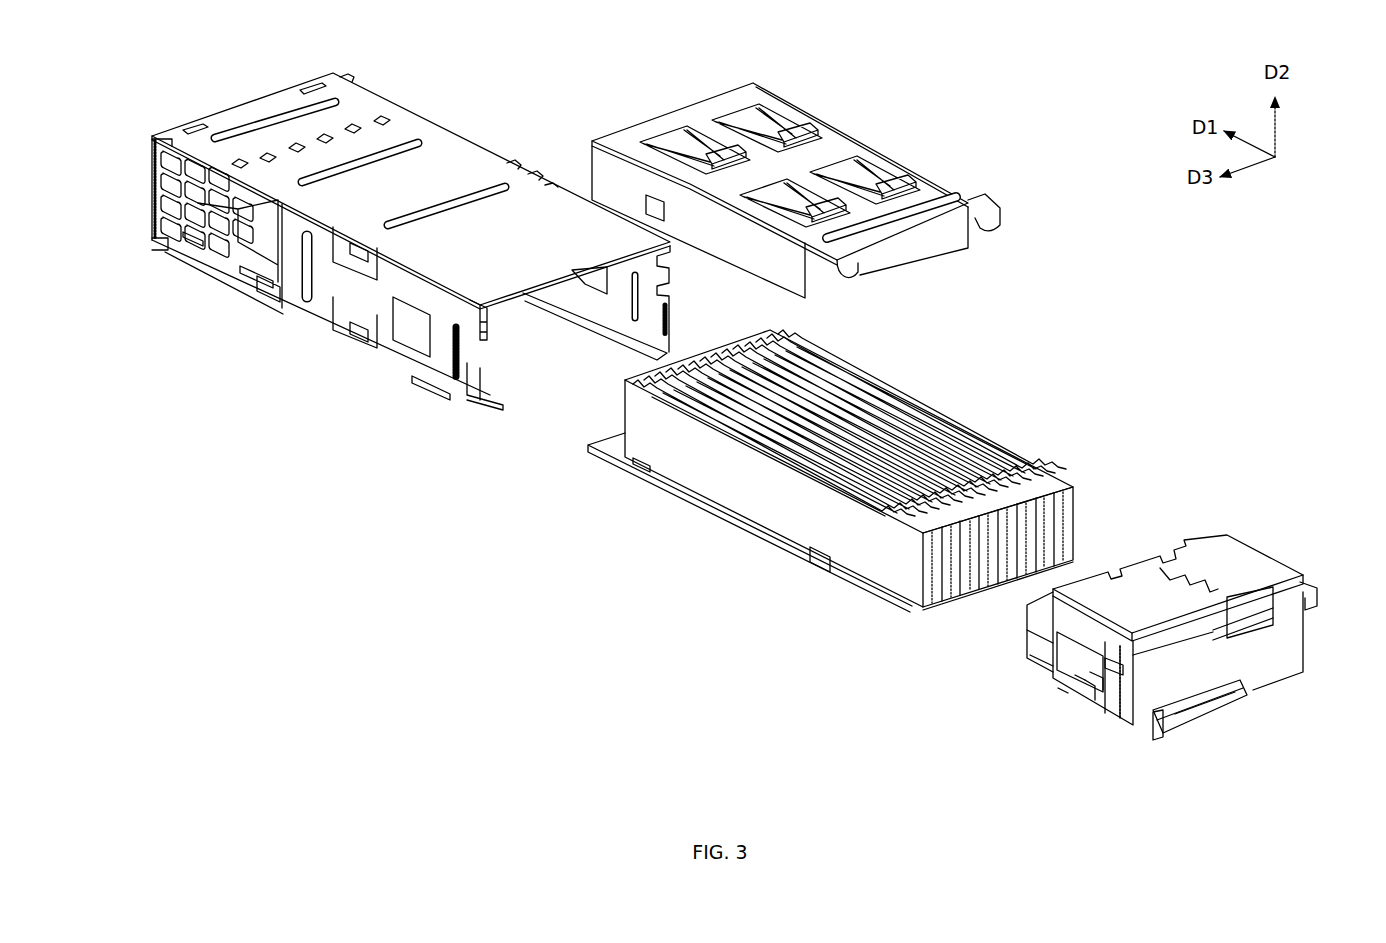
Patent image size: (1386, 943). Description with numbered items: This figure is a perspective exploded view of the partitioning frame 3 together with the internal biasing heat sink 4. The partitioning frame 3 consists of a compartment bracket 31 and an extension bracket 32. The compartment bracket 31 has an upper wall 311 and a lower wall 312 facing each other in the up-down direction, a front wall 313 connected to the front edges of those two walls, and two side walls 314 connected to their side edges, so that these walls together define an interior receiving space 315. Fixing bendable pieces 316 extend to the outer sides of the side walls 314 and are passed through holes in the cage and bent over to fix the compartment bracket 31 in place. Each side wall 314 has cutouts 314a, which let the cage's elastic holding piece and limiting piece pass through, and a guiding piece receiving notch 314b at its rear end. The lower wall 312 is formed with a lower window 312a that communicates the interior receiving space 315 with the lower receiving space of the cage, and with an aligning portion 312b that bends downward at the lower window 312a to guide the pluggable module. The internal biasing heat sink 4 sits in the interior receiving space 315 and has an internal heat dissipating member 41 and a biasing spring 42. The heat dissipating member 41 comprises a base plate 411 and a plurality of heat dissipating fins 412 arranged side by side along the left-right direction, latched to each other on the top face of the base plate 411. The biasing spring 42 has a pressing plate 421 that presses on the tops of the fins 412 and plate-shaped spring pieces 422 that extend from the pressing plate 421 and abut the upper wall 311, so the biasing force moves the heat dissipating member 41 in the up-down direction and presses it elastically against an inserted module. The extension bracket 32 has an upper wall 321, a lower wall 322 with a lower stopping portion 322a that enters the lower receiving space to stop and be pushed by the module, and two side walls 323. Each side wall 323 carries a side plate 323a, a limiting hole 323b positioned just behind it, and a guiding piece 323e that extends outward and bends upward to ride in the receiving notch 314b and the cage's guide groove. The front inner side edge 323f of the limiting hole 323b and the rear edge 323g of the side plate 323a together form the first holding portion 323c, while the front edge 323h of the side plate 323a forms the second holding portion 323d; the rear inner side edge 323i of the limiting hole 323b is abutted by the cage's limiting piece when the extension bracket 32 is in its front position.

The partitioning frame 3 is at (418, 95).
The compartment bracket 31 is at (438, 138).
The upper wall 311 is at (464, 162).
The lower wall 312 is at (230, 263).
The lower window 312a is at (558, 312).
The aligning portion 312b is at (426, 383).
The front wall 313 is at (180, 170).
The side walls 314 is at (325, 278).
The cutouts 314a is at (455, 327).
The guiding piece receiving notch 314b is at (483, 342).
The interior receiving space 315 is at (226, 230).
The fixing bendable pieces 316 is at (360, 335).
The internal biasing heat sink 4 is at (678, 512).
The internal heat dissipating member 41 is at (723, 528).
The base plate 411 is at (750, 537).
The heat dissipating fins 412 is at (912, 407).
The biasing spring 42 is at (877, 137).
The pressing plate 421 is at (828, 152).
The plate-shaped spring pieces 422 is at (740, 148).
The extension bracket 32 is at (1258, 543).
The upper wall 321 is at (1210, 557).
The lower wall 322 is at (1143, 707).
The lower stopping portion 322a is at (1200, 717).
The side walls 323 is at (1277, 593).
The side plate 323a is at (1040, 650).
The limiting hole 323b is at (1103, 677).
The first holding portion 323c is at (1078, 662).
The second holding portion 323d is at (1027, 640).
The guiding piece 323e is at (1113, 663).
The front inner side edge 323f is at (1080, 678).
The rear edge 323g is at (1062, 690).
The front edge 323h is at (1027, 622).
The rear inner side edge 323i is at (1093, 680).